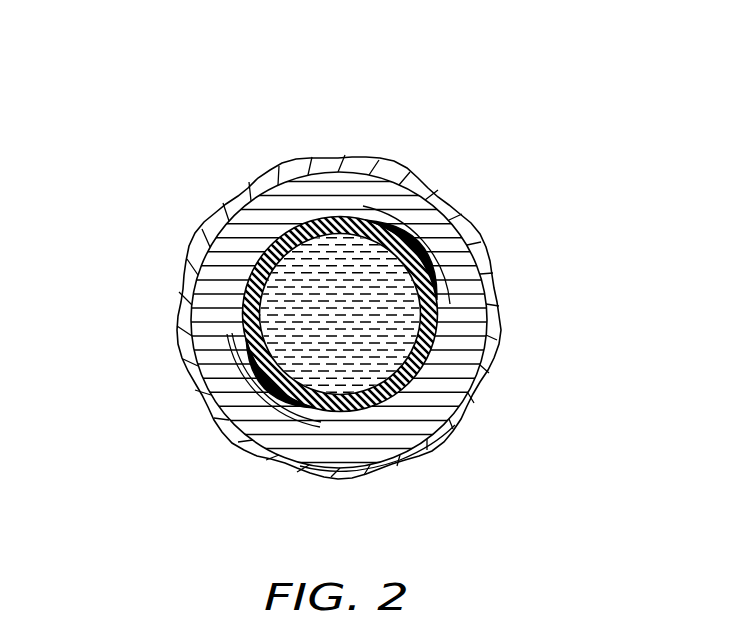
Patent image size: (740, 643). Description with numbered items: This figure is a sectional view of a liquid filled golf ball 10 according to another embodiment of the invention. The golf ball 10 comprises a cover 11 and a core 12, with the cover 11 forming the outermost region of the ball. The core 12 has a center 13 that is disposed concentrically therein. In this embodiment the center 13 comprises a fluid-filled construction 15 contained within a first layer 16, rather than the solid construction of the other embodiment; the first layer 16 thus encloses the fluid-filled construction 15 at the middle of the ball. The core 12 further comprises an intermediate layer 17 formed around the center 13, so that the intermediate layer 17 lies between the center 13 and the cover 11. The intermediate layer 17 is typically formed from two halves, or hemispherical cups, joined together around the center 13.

The golf ball 10 is at (518, 168).
The cover 11 is at (395, 458).
The core 12 is at (492, 276).
The center 13 is at (277, 308).
The fluid-filled construction 15 is at (393, 266).
The first layer 16 is at (437, 300).
The intermediate layer 17 is at (467, 357).